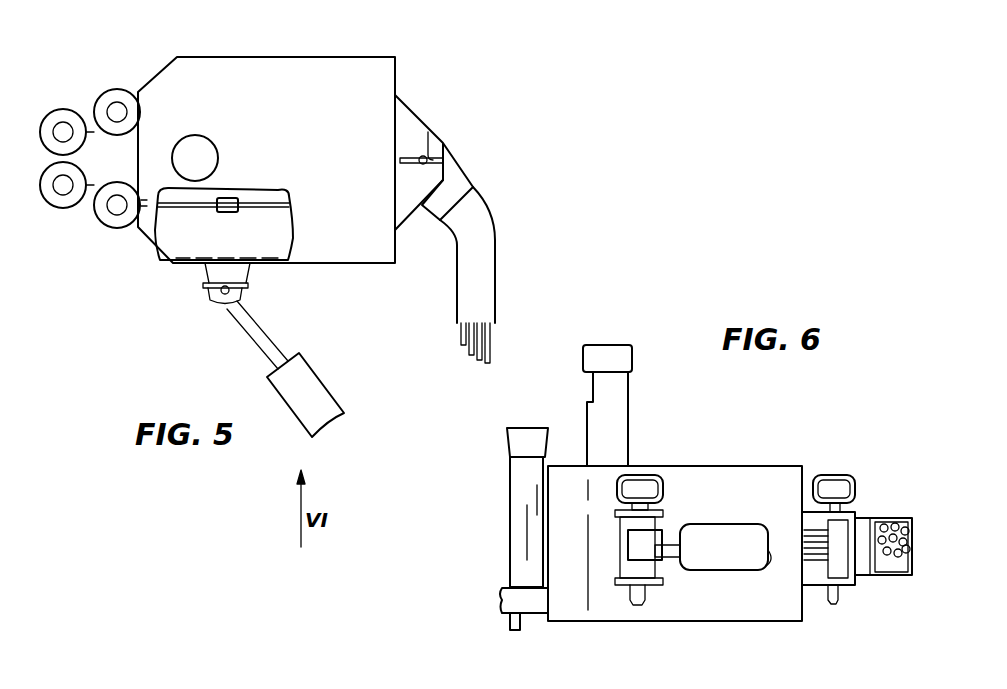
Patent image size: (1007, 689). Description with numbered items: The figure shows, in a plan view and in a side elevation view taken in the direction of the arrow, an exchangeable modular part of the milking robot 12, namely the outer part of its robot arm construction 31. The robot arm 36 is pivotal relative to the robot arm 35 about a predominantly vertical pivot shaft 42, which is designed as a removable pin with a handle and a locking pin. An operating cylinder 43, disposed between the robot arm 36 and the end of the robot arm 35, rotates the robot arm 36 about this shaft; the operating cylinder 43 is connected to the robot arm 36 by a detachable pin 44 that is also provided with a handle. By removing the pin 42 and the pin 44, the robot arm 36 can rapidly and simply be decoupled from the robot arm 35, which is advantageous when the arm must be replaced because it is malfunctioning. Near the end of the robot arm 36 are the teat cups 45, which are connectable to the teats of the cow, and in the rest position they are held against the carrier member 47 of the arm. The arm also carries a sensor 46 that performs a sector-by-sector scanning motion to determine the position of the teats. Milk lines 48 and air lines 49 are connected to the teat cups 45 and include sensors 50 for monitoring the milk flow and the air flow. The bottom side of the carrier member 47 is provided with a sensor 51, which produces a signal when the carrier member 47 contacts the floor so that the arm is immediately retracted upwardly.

In FIG. 5, the milking robot 12 is at (299, 84).
In FIG. 6, the milking robot 12 is at (762, 467).
In FIG. 5, the robot arm construction 31 is at (450, 299).
In FIG. 5, the robot arm 35 is at (490, 280).
In FIG. 6, the robot arm 35 is at (900, 578).
In FIG. 5, the robot arm 36 is at (386, 80).
In FIG. 6, the robot arm 36 is at (728, 616).
In FIG. 5, the vertical pivot shaft 42 is at (433, 132).
In FIG. 6, the vertical pivot shaft 42 is at (835, 607).
In FIG. 5, the operating cylinder 43 is at (318, 398).
In FIG. 6, the operating cylinder 43 is at (731, 535).
In FIG. 5, the detachable pin 44 is at (205, 290).
In FIG. 6, the detachable pin 44 is at (658, 475).
In FIG. 5, the teat cups 45 is at (115, 90).
In FIG. 6, the teat cups 45 is at (510, 473).
In FIG. 5, the sensor 46 is at (213, 147).
In FIG. 6, the sensor 46 is at (615, 397).
In FIG. 5, the carrier member 47 is at (112, 162).
In FIG. 6, the carrier member 47 is at (502, 600).
In FIG. 6, the milk lines 48 is at (895, 509).
In FIG. 6, the air lines 49 is at (895, 518).
In FIG. 5, the sensors 50 is at (238, 198).
In FIG. 6, the sensor 51 is at (506, 624).